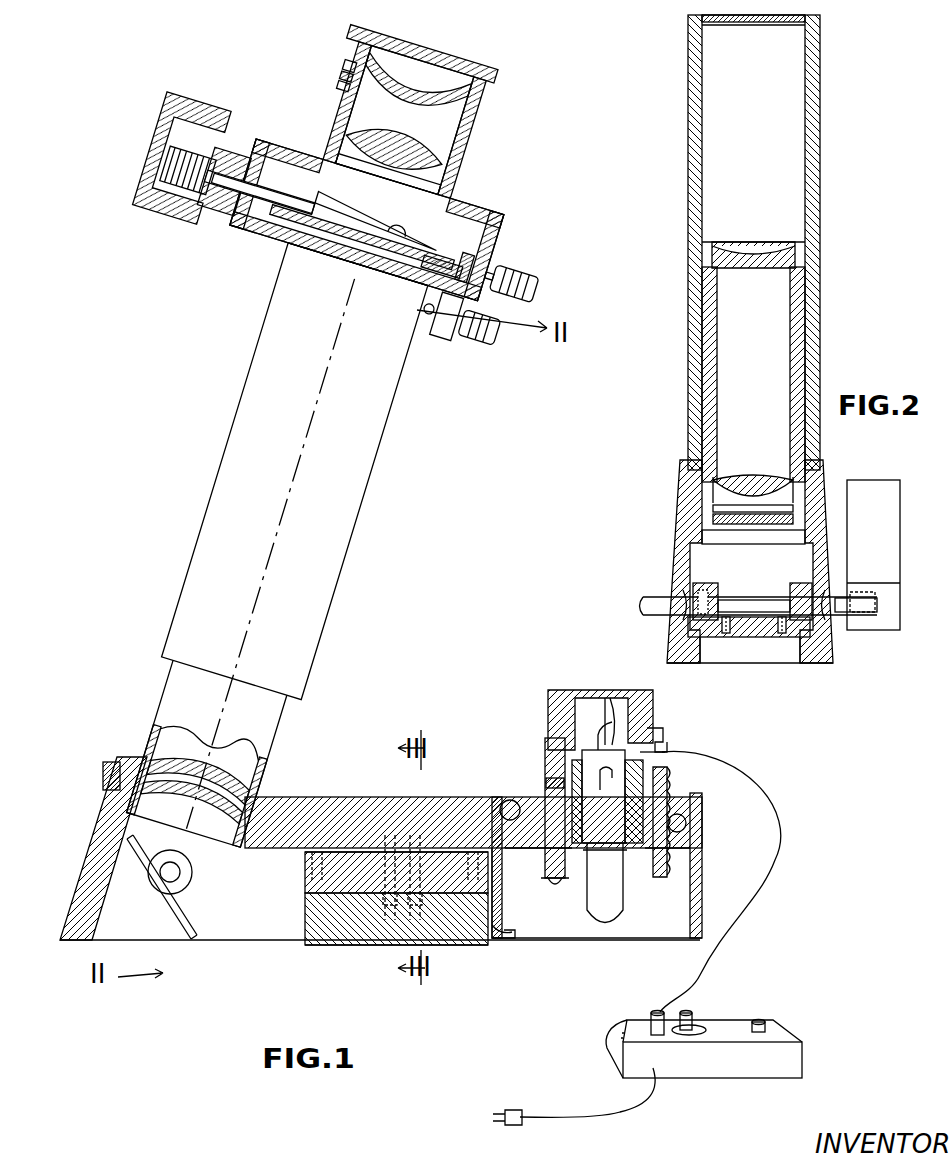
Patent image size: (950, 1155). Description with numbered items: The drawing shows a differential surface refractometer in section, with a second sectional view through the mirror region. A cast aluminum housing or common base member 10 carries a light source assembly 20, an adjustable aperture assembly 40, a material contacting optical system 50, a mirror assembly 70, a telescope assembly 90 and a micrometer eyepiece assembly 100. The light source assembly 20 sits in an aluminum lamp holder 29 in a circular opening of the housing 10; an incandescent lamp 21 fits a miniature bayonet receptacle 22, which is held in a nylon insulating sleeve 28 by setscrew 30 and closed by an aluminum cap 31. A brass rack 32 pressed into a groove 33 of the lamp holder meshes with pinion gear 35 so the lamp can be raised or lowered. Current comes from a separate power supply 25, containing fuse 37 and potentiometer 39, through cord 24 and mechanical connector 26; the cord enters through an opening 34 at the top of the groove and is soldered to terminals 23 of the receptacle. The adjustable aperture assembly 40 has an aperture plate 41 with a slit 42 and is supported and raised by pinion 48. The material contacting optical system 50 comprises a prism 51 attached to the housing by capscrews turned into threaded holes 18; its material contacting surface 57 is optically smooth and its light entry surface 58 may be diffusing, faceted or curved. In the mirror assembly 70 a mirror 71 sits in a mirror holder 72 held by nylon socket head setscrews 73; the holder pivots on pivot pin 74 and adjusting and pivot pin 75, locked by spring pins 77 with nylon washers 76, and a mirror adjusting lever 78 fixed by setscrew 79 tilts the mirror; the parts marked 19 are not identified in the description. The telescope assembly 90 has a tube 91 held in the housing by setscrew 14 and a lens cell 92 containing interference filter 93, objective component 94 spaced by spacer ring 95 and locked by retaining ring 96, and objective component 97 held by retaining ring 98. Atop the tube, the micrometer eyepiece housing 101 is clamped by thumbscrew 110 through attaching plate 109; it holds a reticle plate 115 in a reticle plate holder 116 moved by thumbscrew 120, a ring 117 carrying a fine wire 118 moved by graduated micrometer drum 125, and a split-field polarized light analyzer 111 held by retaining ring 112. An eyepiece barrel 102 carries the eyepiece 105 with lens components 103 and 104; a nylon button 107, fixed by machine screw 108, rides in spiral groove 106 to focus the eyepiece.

In FIG. 1, the housing 10 is at (318, 797).
In FIG. 1, the setscrew 14 is at (105, 782).
In FIG. 1, the threaded holes 18 is at (400, 830).
In FIG. 2, the bearing rings 19 is at (678, 590).
In FIG. 1, the light source assembly 20 is at (531, 690).
In FIG. 1, the incandescent lamp 21 is at (605, 883).
In FIG. 1, the miniature bayonet receptacle 22 is at (607, 796).
In FIG. 1, the terminals 23 is at (609, 710).
In FIG. 1, the cord 24 is at (780, 830).
In FIG. 1, the power supply 25 is at (805, 1057).
In FIG. 1, the mechanical connector 26 is at (652, 1015).
In FIG. 1, the nylon insulating sleeve 28 is at (580, 742).
In FIG. 1, the lamp holder 29 is at (546, 755).
In FIG. 1, the setscrew 30 is at (545, 790).
In FIG. 1, the aluminum cap 31 is at (556, 695).
In FIG. 1, the brass rack 32 is at (668, 866).
In FIG. 1, the groove 33 is at (655, 728).
In FIG. 1, the opening 34 is at (662, 752).
In FIG. 1, the pinion gear 35 is at (672, 812).
In FIG. 1, the fuse 37 is at (753, 1022).
In FIG. 1, the potentiometer 39 is at (692, 1013).
In FIG. 1, the adjustable aperture assembly 40 is at (533, 898).
In FIG. 1, the aperture plate 41 is at (500, 930).
In FIG. 1, the slit 42 is at (508, 938).
In FIG. 1, the pinion 48 is at (507, 800).
In FIG. 1, the material contacting optical system 50 is at (284, 914).
In FIG. 1, the prism 51 is at (325, 945).
In FIG. 1, the material contacting surface 57 is at (465, 945).
In FIG. 1, the light entry surface 58 is at (505, 945).
In FIG. 1, the mirror assembly 70 is at (145, 903).
In FIG. 1, the mirror 71 is at (185, 918).
In FIG. 2, the mirror 71 is at (764, 604).
In FIG. 2, the mirror holder 72 is at (750, 636).
In FIG. 2, the nylon socket head setscrews 73 is at (725, 636).
In FIG. 2, the mirror holder pivot pin 74 is at (645, 606).
In FIG. 2, the mirror holder adjusting and pivot pin 75 is at (835, 612).
In FIG. 2, the nylon washers 76 is at (690, 590).
In FIG. 2, the self-locking steel spring pins 77 is at (702, 640).
In FIG. 2, the mirror adjusting lever 78 is at (890, 541).
In FIG. 2, the setscrew 79 is at (868, 625).
In FIG. 1, the telescope assembly 90 is at (377, 503).
In FIG. 2, the telescope assembly 90 is at (668, 260).
In FIG. 1, the tube 91 is at (262, 334).
In FIG. 2, the tube 91 is at (688, 125).
In FIG. 1, the lens cell 92 is at (160, 697).
In FIG. 2, the interference filter 93 is at (712, 520).
In FIG. 2, the objective component 94 is at (712, 488).
In FIG. 2, the spacer ring 95 is at (712, 508).
In FIG. 2, the retaining ring 96 is at (728, 545).
In FIG. 2, the objective component 97 is at (773, 265).
In FIG. 2, the retaining ring 98 is at (718, 245).
In FIG. 1, the micrometer eyepiece assembly 100 is at (491, 142).
In FIG. 1, the micrometer eyepiece housing 101 is at (472, 215).
In FIG. 1, the micrometer eyepiece barrel 102 is at (340, 118).
In FIG. 1, the magnification lens component 103 is at (410, 82).
In FIG. 1, the magnification lens component 104 is at (385, 103).
In FIG. 1, the eyepiece 105 is at (495, 70).
In FIG. 1, the spiral groove 106 is at (356, 52).
In FIG. 1, the nylon button 107 is at (350, 60).
In FIG. 1, the round head machine screw 108 is at (340, 72).
In FIG. 1, the attaching plate 109 is at (433, 338).
In FIG. 1, the thumbscrew 110 is at (482, 338).
In FIG. 1, the split-field polarized light analyzer 111 is at (380, 262).
In FIG. 2, the split-field polarized light analyzer 111 is at (700, 22).
In FIG. 1, the retaining ring 112 is at (410, 272).
In FIG. 2, the retaining ring 112 is at (706, 25).
In FIG. 1, the reticle plate 115 is at (345, 245).
In FIG. 1, the reticle plate holder 116 is at (285, 215).
In FIG. 1, the ring 117 is at (335, 188).
In FIG. 1, the fine diameter wire 118 is at (358, 236).
In FIG. 1, the reticle scale adjusting thumbscrew 120 is at (520, 272).
In FIG. 1, the graduated micrometer drum 125 is at (165, 101).